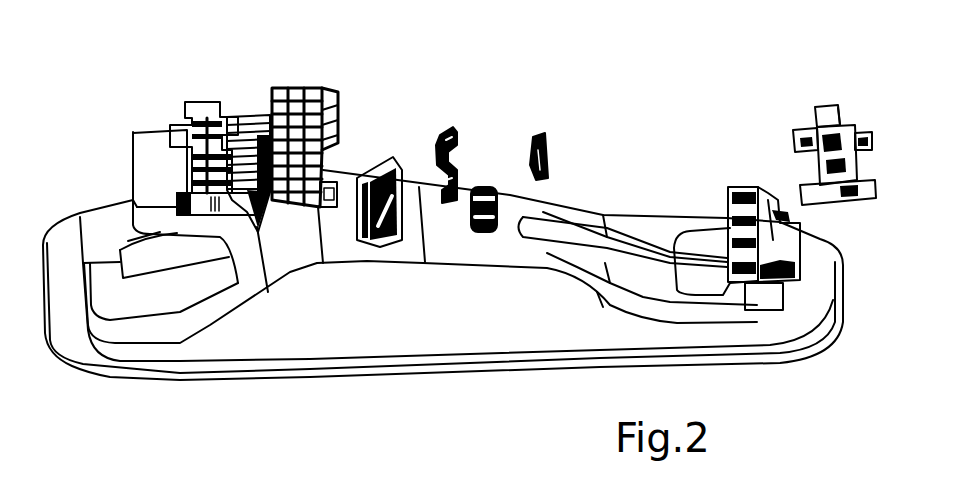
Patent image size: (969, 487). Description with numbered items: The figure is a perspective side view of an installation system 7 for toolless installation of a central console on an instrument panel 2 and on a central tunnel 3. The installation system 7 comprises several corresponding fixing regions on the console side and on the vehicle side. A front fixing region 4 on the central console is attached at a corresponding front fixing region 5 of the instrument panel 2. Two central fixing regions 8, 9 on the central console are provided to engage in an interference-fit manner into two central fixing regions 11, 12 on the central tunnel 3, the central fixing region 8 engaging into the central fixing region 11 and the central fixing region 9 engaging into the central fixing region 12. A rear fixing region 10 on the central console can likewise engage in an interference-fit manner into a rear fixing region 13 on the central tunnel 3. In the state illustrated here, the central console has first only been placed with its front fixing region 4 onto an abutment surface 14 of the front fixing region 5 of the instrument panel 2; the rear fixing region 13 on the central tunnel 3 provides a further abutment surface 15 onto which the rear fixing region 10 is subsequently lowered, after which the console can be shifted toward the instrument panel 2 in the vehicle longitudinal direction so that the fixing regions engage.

The instrument panel 2 is at (152, 172).
The central tunnel 3 is at (860, 288).
The front fixing region 4 is at (308, 85).
The front fixing region 5 is at (210, 143).
The installation system 7 is at (868, 110).
The central fixing region 8 is at (455, 130).
The central fixing region 9 is at (545, 120).
The rear fixing region 10 is at (825, 102).
The central fixing region 11 is at (378, 247).
The central fixing region 12 is at (481, 239).
The rear fixing region 13 is at (758, 276).
The abutment surface 14 is at (247, 113).
The abutment surface 15 is at (753, 192).